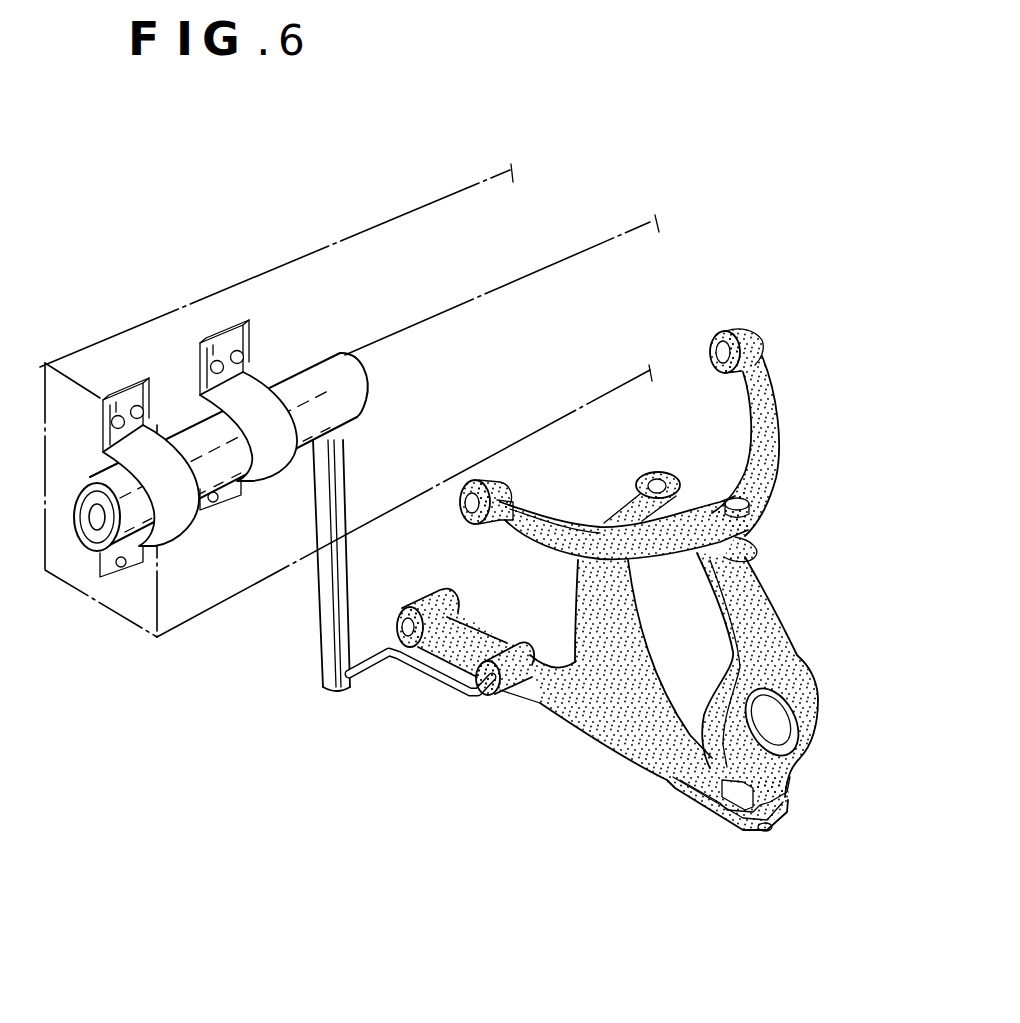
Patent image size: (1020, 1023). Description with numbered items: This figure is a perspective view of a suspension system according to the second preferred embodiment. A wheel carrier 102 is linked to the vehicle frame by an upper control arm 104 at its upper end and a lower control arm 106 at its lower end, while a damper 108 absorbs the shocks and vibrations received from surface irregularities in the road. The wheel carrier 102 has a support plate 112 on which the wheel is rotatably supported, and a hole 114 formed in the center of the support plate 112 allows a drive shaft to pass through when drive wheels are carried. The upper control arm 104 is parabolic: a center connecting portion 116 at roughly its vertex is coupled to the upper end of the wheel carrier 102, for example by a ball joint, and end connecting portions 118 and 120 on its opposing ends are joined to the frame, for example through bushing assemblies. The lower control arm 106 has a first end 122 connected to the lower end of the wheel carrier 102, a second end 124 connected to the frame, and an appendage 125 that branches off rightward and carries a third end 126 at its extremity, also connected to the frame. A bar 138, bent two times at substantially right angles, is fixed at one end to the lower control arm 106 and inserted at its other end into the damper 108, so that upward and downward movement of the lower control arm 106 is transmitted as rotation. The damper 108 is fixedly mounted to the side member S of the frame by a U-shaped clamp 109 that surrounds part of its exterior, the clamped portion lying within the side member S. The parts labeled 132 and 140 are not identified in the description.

The side member S is at (476, 176).
The wheel carrier 102 is at (775, 711).
The upper control arm 104 is at (788, 393).
The lower control arm 106 is at (582, 745).
The damper 108 is at (228, 598).
The U-shaped clamp 109 is at (255, 378).
The support plate 112 is at (795, 663).
The hole 114 is at (798, 668).
The center connecting portion 116 is at (773, 507).
The end connecting portion 118 is at (485, 478).
The end connecting portion 120 is at (735, 330).
The first end 122 is at (763, 833).
The second end 124 is at (415, 600).
The appendage 125 is at (597, 607).
The third end 126 is at (660, 473).
The tube end 132 is at (97, 553).
The bar 138 is at (430, 688).
The vertical rod 140 is at (323, 650).